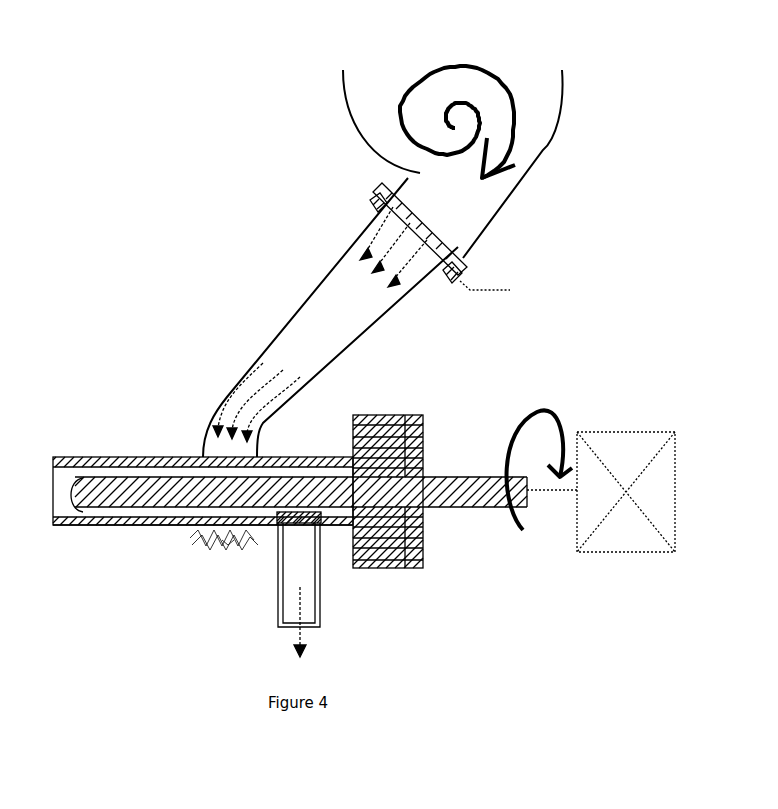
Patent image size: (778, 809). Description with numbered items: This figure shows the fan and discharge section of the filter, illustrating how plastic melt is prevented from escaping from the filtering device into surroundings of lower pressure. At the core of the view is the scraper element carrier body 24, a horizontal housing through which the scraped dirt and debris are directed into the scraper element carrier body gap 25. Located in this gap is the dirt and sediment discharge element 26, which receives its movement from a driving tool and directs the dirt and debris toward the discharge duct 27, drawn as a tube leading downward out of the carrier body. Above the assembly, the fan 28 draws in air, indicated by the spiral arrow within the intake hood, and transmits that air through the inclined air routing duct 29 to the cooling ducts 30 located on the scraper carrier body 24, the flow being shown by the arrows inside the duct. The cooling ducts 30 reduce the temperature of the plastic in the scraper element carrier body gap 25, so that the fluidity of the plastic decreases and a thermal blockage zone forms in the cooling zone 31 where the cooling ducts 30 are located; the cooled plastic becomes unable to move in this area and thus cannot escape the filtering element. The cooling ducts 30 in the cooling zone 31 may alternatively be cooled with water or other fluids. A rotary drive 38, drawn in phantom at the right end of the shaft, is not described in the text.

The scraper element carrier body 24 is at (92, 460).
The scraper element carrier body gap 25 is at (75, 528).
The dirt and sediment discharge element 26 is at (123, 528).
The discharge duct 27 is at (303, 568).
The fan 28 is at (533, 158).
The air routing duct 29 is at (285, 342).
The cooling ducts 30 is at (208, 537).
The cooling zone 31 is at (223, 543).
The motor 38 is at (627, 490).